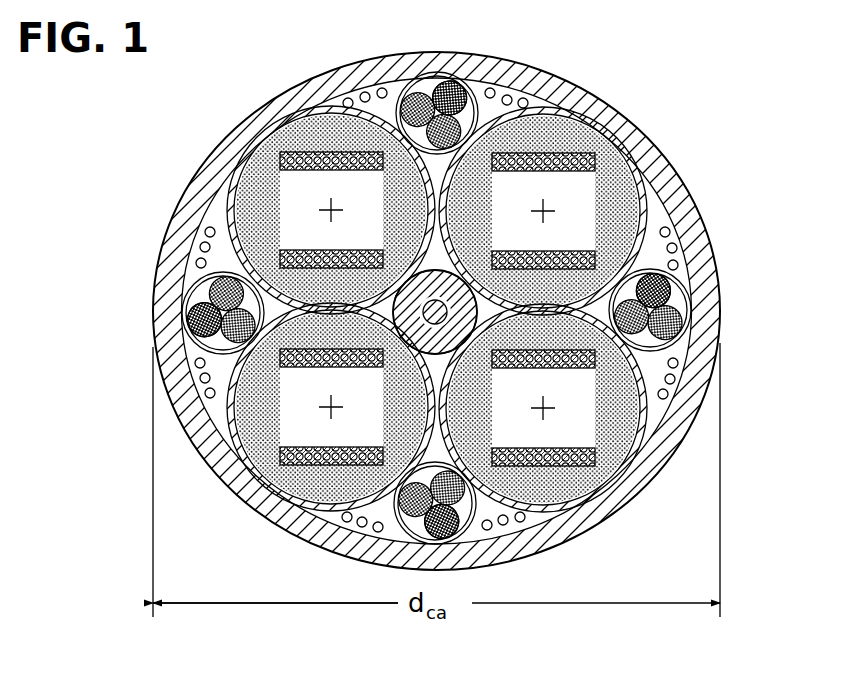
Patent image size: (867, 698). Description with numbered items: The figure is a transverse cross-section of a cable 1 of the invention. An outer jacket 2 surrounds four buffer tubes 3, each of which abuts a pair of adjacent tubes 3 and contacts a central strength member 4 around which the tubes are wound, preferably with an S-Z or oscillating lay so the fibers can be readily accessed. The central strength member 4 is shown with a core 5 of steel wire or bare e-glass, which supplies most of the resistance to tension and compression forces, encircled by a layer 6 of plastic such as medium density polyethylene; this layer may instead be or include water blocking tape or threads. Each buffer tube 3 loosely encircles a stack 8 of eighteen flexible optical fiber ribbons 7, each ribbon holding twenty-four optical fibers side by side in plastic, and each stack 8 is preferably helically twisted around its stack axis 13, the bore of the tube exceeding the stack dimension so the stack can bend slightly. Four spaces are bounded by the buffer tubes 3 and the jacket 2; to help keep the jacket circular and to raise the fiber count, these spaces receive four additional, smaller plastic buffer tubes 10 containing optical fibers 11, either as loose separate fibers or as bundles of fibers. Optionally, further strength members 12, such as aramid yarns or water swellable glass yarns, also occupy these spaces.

The cable 1 is at (672, 115).
The jacket 2 is at (713, 232).
The buffer tube 3 is at (397, 295).
The central strength member 4 is at (394, 312).
The core 5 is at (467, 306).
The layer of plastic 6 is at (452, 337).
The optical fiber ribbon 7 is at (309, 176).
The stack 8 is at (245, 211).
The smaller plastic buffer tube 10 is at (465, 83).
The optical fibers 11 is at (443, 88).
The further strength members 12 is at (358, 95).
The stack axis 13 is at (302, 136).